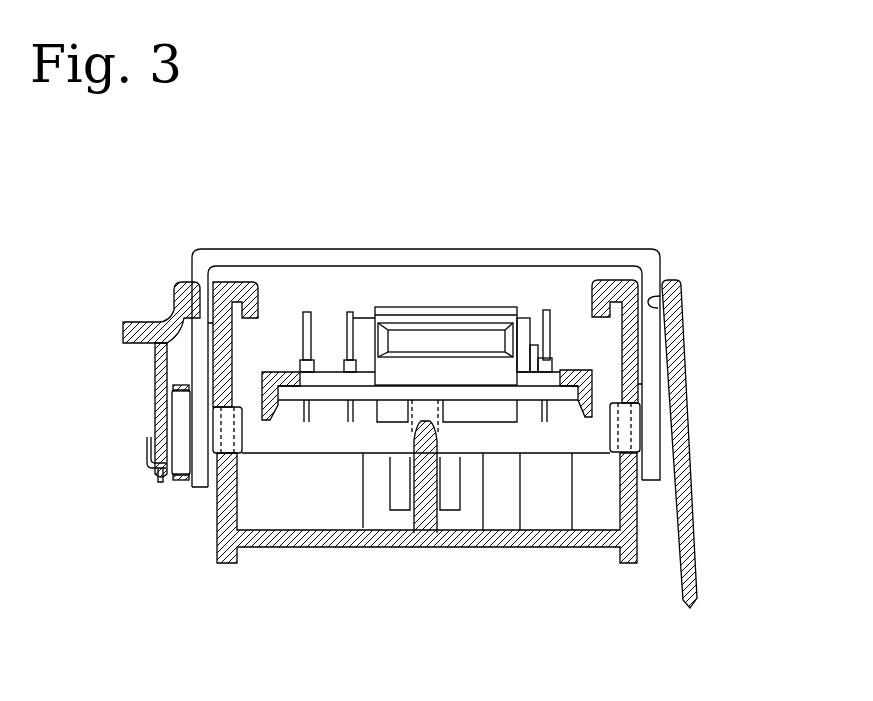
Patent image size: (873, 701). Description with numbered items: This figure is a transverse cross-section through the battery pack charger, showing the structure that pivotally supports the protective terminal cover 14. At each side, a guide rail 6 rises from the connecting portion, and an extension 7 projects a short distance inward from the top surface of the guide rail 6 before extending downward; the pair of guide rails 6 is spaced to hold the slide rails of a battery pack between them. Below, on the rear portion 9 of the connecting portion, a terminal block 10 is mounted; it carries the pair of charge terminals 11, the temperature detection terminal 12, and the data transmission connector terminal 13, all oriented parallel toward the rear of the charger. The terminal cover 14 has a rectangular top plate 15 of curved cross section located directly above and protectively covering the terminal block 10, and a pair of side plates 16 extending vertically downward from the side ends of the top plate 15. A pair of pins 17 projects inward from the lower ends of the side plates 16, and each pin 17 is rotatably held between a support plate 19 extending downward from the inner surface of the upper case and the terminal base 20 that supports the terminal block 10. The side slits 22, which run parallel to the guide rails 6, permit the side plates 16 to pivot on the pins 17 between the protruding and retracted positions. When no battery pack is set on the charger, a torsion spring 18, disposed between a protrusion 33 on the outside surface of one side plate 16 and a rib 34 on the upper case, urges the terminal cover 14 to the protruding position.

The guide rail 6 is at (613, 279).
The extension 7 is at (240, 280).
The rear portion 9 is at (295, 402).
The terminal block 10 is at (532, 375).
The charge terminal 11 is at (303, 312).
The temperature detection terminal 12 is at (347, 312).
The data transmission connector terminal 13 is at (465, 320).
The terminal cover 14 is at (394, 249).
The top plate 15 is at (436, 263).
The side plate 16 is at (181, 304).
The pin 17 is at (240, 436).
The torsion spring 18 is at (182, 479).
The support plate 19 is at (208, 323).
The terminal base 20 is at (628, 503).
The side slit 22 is at (193, 278).
The protrusion 33 is at (160, 479).
The rib 34 is at (156, 388).